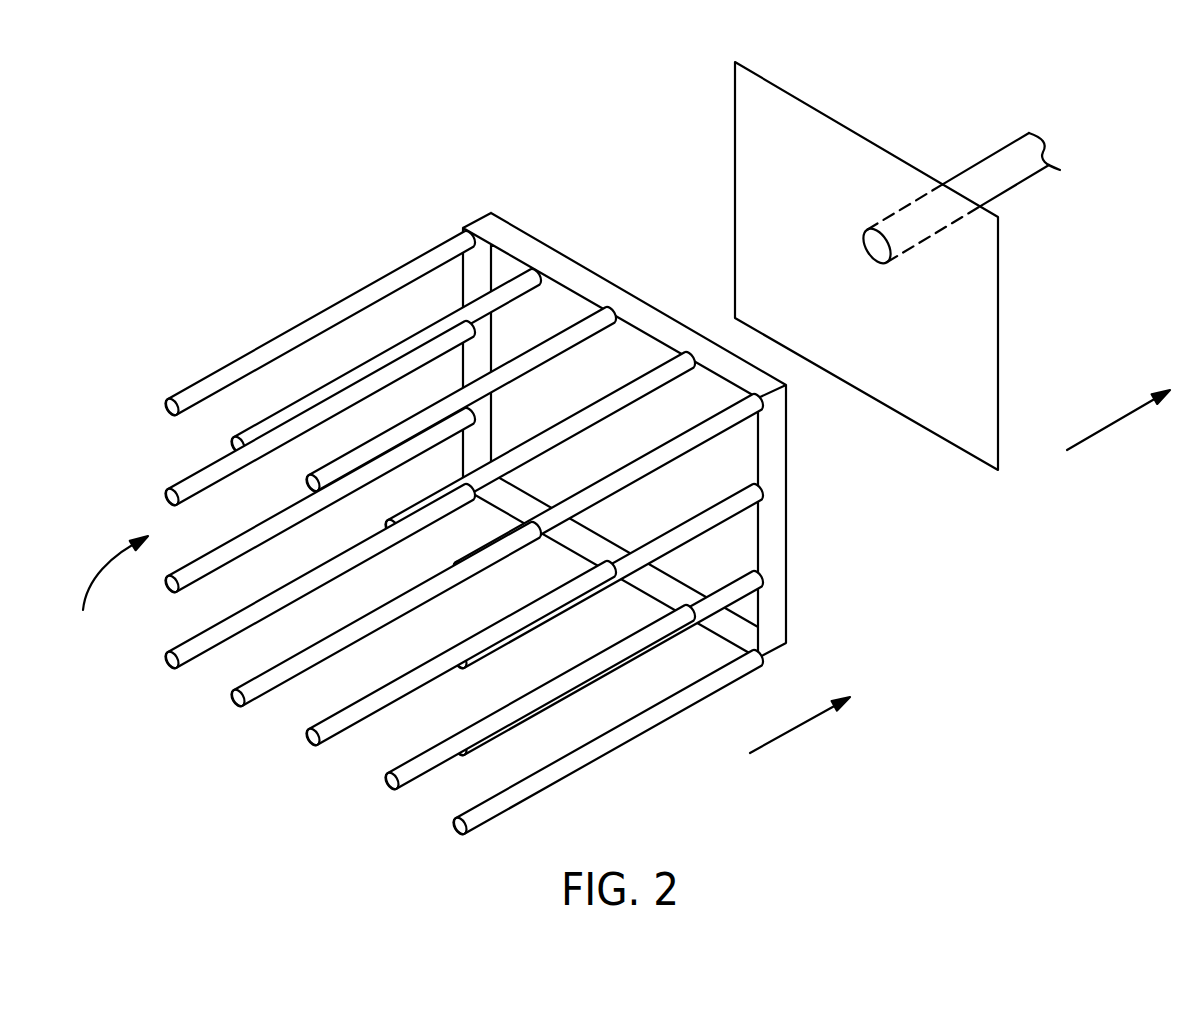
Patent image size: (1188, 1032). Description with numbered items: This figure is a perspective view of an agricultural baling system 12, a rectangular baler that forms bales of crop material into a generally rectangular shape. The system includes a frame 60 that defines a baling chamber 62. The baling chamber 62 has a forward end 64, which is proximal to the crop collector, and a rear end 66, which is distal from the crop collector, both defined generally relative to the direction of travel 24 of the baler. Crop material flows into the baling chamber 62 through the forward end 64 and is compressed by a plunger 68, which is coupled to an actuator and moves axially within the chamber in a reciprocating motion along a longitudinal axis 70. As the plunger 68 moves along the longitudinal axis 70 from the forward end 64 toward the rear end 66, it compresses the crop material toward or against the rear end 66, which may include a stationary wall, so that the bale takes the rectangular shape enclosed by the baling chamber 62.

The agricultural baling system 12 is at (992, 83).
The direction of travel 24 is at (795, 730).
The frame 60 is at (738, 587).
The baling chamber 62 is at (292, 634).
The forward end 64 is at (579, 241).
The rear end 66 is at (108, 591).
The plunger 68 is at (1017, 175).
The longitudinal axis 70 is at (1113, 423).